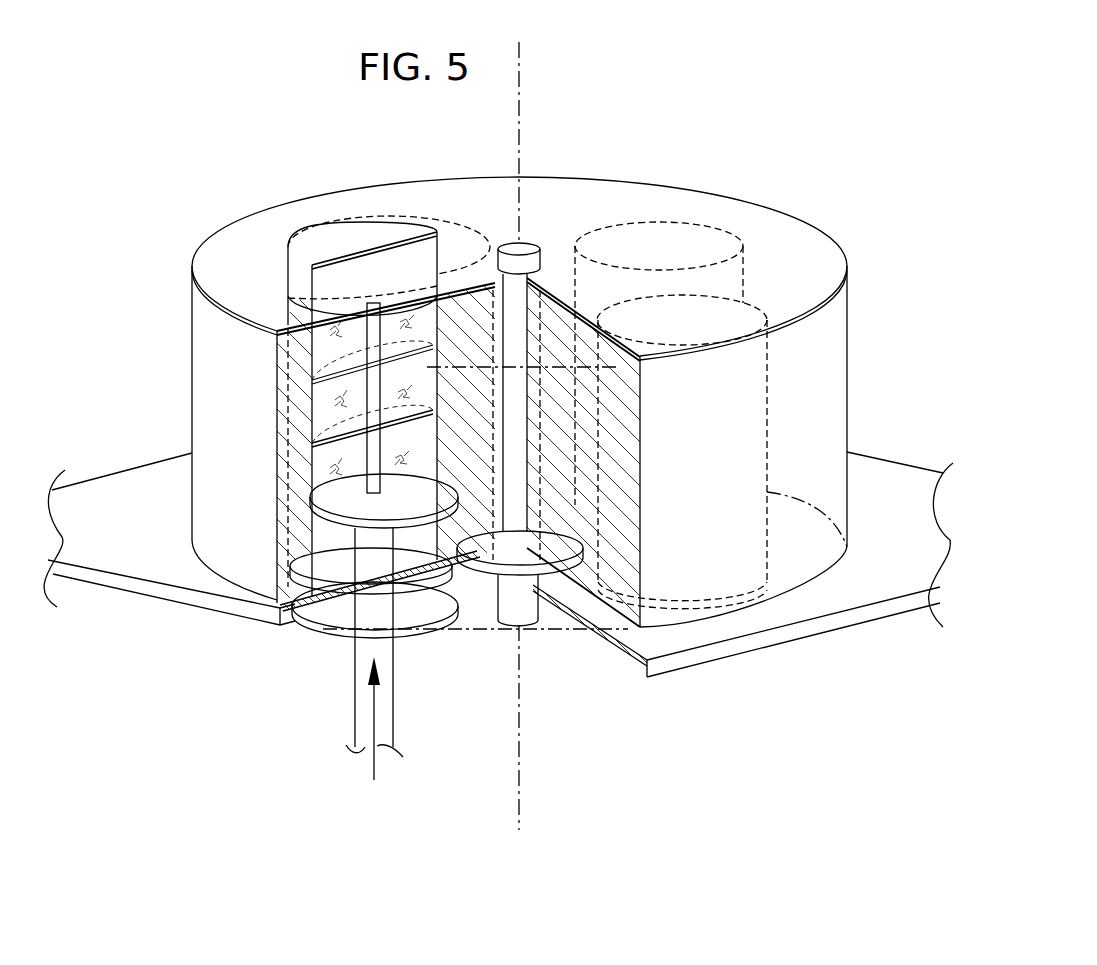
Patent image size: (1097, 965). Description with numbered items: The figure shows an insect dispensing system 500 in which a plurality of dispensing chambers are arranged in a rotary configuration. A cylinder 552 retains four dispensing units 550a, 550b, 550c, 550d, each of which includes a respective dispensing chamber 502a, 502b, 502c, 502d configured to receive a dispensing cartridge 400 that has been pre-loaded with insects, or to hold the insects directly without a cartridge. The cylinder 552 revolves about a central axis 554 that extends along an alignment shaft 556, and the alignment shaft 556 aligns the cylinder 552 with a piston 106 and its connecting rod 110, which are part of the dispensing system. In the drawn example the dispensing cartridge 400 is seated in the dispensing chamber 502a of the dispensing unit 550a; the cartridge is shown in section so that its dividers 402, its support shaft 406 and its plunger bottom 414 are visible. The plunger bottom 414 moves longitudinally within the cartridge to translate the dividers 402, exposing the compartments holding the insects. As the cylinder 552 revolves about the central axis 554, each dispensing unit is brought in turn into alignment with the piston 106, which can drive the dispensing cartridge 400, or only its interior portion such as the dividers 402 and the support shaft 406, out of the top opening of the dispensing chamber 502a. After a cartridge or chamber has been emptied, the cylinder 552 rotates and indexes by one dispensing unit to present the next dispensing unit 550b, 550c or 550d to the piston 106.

The dispensing system 500 is at (646, 83).
The cylinder 552 is at (557, 194).
The central axis 554 is at (520, 796).
The alignment shaft 556 is at (523, 610).
The dispensing cartridge 400 is at (333, 221).
The dividers 402 is at (360, 372).
The support shaft 406 is at (318, 378).
The plunger bottom 414 is at (330, 567).
The piston 106 is at (343, 628).
The connecting rod 110 is at (363, 727).
The dispensing unit 550a is at (268, 244).
The dispensing unit 550b is at (405, 197).
The dispensing unit 550c is at (640, 197).
The dispensing unit 550d is at (775, 284).
The dispensing chamber 502a is at (283, 307).
The dispensing chamber 502b is at (443, 220).
The dispensing chamber 502c is at (706, 237).
The dispensing chamber 502d is at (787, 323).